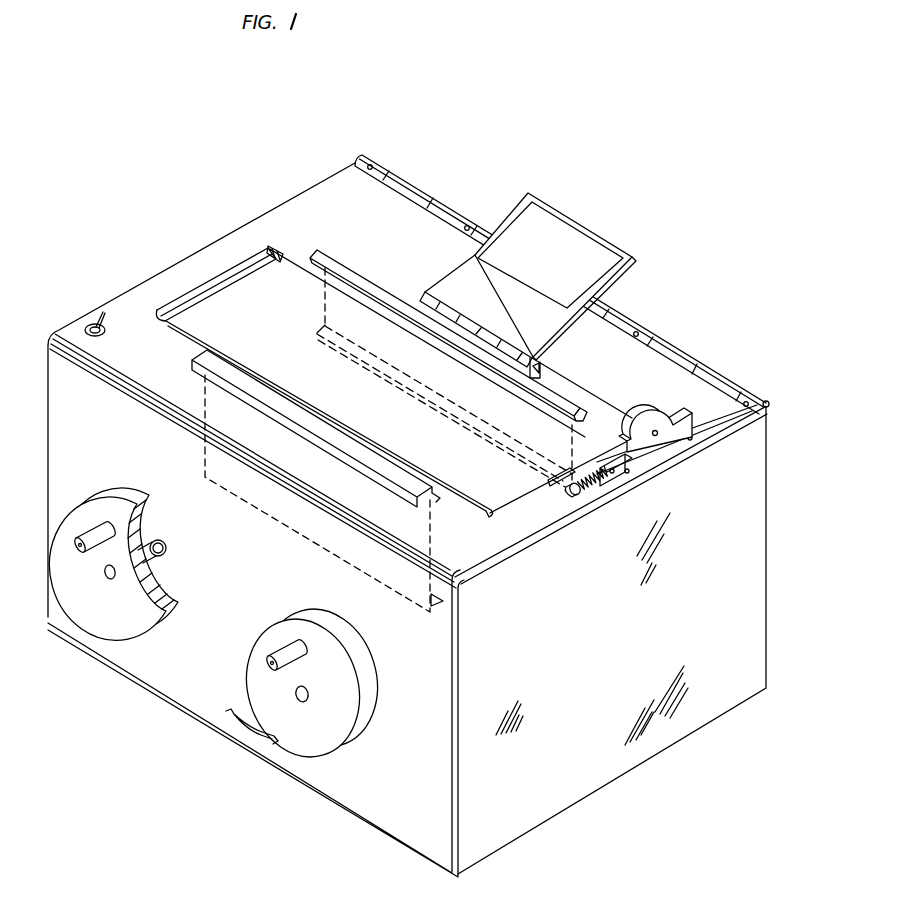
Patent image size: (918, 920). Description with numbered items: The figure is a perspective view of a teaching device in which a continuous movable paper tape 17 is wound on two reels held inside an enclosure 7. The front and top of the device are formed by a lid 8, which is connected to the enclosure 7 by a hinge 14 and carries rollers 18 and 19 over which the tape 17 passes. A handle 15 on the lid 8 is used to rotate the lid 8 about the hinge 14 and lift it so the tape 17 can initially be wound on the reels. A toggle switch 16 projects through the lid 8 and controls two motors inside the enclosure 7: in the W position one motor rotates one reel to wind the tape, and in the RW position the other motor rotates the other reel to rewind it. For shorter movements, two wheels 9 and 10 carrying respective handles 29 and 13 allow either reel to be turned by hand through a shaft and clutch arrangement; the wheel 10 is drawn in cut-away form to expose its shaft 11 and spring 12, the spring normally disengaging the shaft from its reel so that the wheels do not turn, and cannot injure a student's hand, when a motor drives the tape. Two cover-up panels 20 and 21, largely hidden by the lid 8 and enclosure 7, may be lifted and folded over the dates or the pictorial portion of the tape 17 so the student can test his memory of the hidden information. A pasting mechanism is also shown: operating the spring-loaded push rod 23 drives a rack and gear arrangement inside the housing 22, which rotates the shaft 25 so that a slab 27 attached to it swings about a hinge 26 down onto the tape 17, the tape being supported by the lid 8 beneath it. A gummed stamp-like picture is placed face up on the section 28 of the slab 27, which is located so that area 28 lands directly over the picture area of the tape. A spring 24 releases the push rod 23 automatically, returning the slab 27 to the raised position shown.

The enclosure 7 is at (757, 558).
The lid 8 is at (421, 843).
The wheel 9 is at (330, 753).
The wheel 10 is at (137, 640).
The shaft 11 is at (150, 563).
The spring 12 is at (152, 538).
The handle 13 is at (93, 552).
The hinge 14 is at (767, 399).
The handle 15 is at (232, 733).
The toggle switch 16 is at (96, 323).
The tape 17 is at (212, 315).
The roller 18 is at (481, 513).
The roller 19 is at (278, 249).
The cover-up panel 20 is at (392, 478).
The cover-up panel 21 is at (579, 417).
The housing 22 is at (686, 418).
The push rod 23 is at (573, 492).
The spring 24 is at (592, 485).
The shaft 25 is at (596, 394).
The hinge 26 is at (427, 291).
The slab 27 is at (635, 262).
The section 28 is at (576, 236).
The handle 29 is at (298, 646).